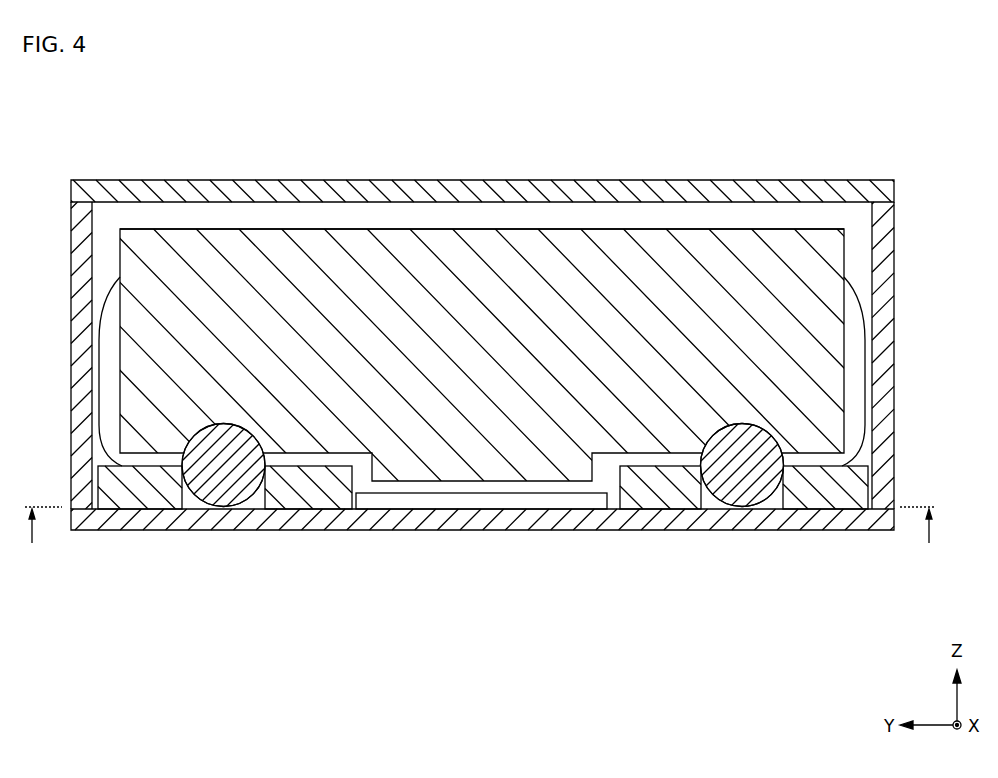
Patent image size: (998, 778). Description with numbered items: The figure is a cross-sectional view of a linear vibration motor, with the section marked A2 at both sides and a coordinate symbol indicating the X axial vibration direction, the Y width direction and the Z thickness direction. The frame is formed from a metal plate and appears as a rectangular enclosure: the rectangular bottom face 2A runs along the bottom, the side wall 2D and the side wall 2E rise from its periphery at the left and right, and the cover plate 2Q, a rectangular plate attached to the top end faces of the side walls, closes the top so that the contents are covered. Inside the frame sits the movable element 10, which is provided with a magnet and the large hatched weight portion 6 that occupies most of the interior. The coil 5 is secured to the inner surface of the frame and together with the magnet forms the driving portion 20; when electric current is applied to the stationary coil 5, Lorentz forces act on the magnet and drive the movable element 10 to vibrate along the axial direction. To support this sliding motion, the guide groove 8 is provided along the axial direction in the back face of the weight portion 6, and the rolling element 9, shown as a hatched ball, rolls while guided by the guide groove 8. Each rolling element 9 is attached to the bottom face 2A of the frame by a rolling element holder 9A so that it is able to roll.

The bottom face 2A is at (449, 530).
The side wall 2D is at (71, 352).
The side wall 2E is at (894, 352).
The cover plate 2Q is at (727, 180).
The coil 5 is at (499, 355).
The driving portion 20 is at (860, 280).
The weight portion 6 is at (482, 181).
The movable element 10 is at (302, 229).
The guide groove 8 is at (203, 509).
The rolling element 9 is at (254, 509).
The rolling element holder 9A is at (87, 509).
The section line A2 is at (482, 539).